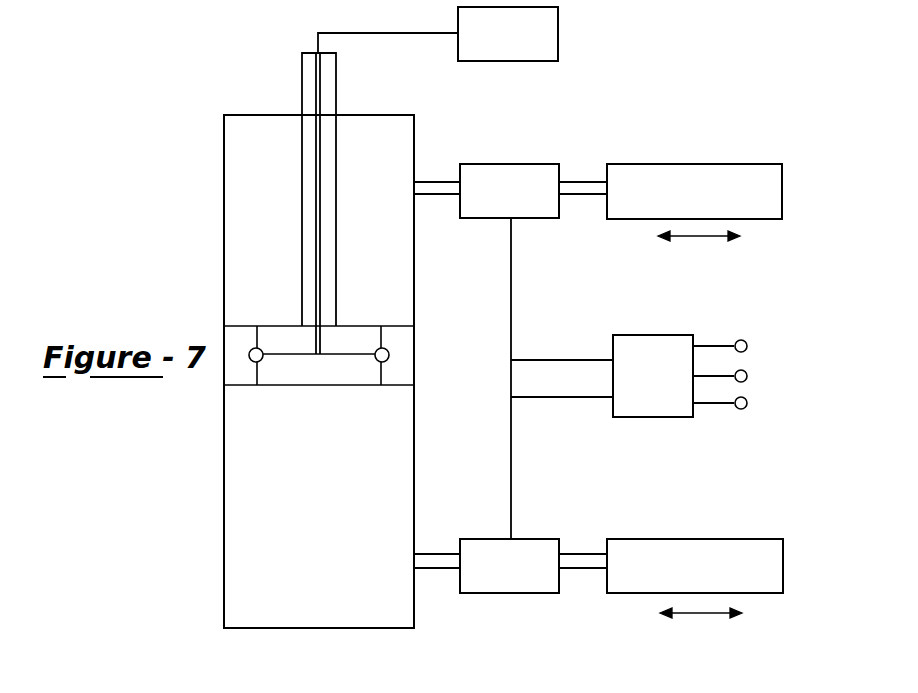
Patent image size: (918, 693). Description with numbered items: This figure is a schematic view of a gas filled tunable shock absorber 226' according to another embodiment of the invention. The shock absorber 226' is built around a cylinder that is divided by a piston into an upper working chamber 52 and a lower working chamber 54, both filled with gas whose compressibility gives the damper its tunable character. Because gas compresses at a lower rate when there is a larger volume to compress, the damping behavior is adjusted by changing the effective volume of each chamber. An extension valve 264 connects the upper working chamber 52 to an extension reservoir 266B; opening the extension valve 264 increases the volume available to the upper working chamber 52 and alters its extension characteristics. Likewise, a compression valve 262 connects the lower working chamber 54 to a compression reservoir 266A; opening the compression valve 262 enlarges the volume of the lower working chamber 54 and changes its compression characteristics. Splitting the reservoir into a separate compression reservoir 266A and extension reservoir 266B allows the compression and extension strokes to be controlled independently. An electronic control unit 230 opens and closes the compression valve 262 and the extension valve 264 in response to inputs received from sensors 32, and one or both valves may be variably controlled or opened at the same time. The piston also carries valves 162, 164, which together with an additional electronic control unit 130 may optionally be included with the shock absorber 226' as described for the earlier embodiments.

The tunable shock absorber 226' is at (228, 345).
The electronic control unit 130 is at (523, 49).
The upper working chamber 52 is at (273, 247).
The lower working chamber 54 is at (291, 501).
The valve 162 is at (249, 358).
The valve 164 is at (388, 352).
The extension valve 264 is at (522, 207).
The extension reservoir 266B is at (712, 207).
The electronic control unit 230 is at (658, 393).
The sensors 32 is at (747, 405).
The compression valve 262 is at (522, 581).
The compression reservoir 266A is at (712, 581).